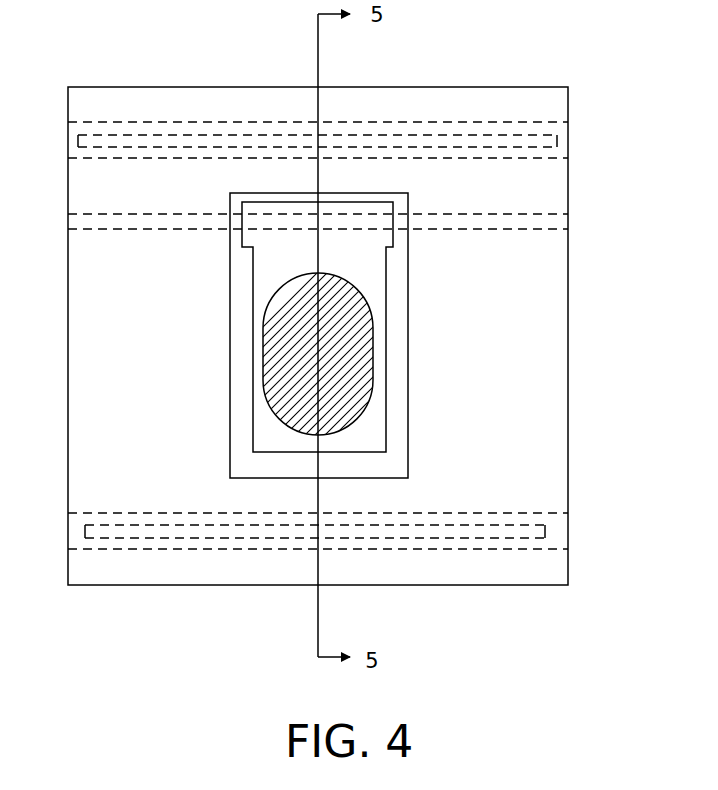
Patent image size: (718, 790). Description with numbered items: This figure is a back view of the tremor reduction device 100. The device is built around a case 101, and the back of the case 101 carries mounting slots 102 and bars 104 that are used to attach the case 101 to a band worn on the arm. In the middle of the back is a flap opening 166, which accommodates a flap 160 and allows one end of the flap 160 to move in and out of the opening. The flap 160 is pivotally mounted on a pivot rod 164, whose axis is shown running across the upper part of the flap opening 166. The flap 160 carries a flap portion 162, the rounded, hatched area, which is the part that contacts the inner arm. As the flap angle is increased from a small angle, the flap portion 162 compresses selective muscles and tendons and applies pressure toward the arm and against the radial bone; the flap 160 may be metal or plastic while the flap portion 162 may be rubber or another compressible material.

The tremor reduction device 100 is at (270, 56).
The case 101 is at (555, 313).
The mounting slots 102 is at (548, 122).
The bars 104 is at (558, 141).
The flap 160 is at (380, 333).
The flap portion 162 is at (278, 353).
The pivot rod 164 is at (565, 225).
The flap opening 166 is at (408, 405).